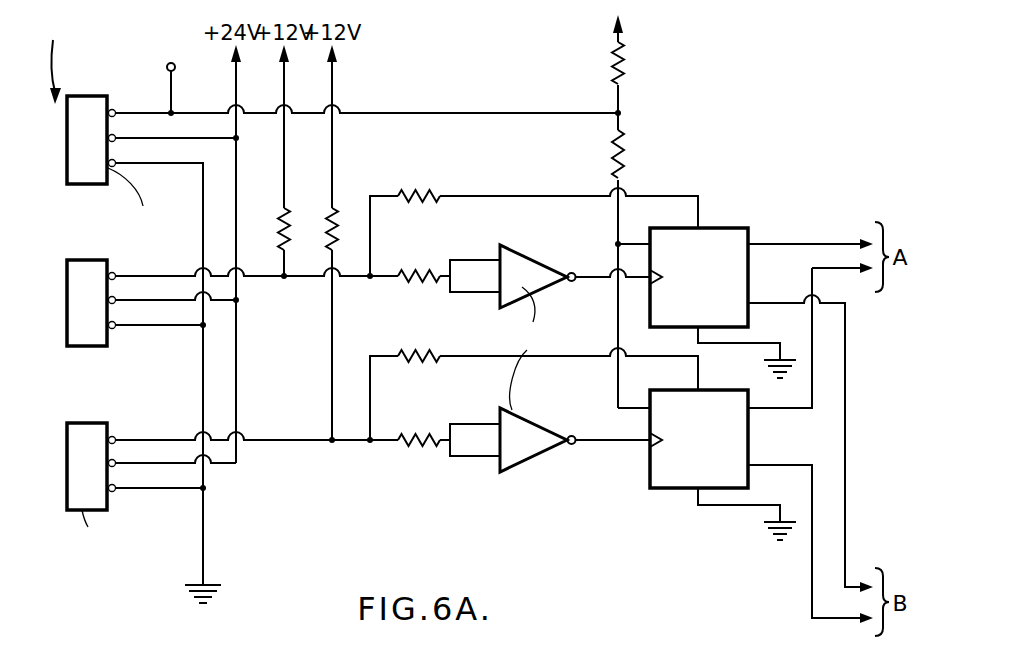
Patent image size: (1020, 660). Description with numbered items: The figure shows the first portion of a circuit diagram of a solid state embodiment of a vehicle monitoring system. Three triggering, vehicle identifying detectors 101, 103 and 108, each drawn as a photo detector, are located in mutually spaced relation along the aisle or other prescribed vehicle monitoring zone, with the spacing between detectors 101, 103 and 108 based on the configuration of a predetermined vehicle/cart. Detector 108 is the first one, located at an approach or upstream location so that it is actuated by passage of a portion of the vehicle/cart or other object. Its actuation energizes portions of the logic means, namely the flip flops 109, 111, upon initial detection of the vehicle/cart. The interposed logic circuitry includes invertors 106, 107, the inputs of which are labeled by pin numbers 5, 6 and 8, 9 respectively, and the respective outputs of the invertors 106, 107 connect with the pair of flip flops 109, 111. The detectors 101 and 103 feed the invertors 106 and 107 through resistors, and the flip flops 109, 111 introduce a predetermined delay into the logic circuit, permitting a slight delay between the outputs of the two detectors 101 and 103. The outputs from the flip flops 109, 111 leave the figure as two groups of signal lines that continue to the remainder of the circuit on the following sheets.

The detector 108 is at (78, 95).
The detector 101 is at (80, 268).
The detector 103 is at (85, 423).
The invertor 106 is at (532, 299).
The invertor 107 is at (532, 417).
The flip flop 109 is at (722, 227).
The flip flop 111 is at (665, 490).
The inverter input pin 5 is at (475, 249).
The inverter input pin 6 is at (475, 307).
The inverter input pin 8 is at (475, 413).
The inverter input pin 9 is at (475, 471).